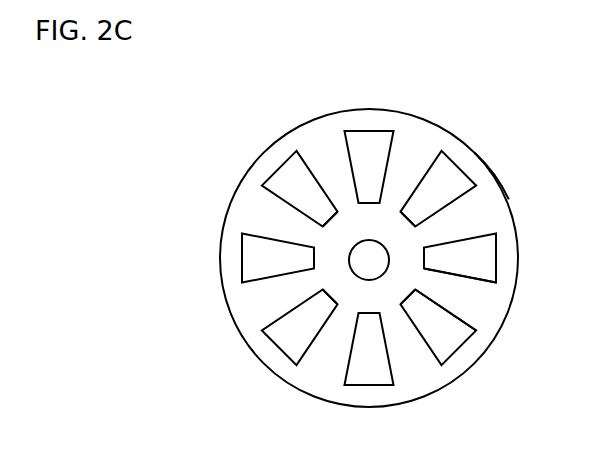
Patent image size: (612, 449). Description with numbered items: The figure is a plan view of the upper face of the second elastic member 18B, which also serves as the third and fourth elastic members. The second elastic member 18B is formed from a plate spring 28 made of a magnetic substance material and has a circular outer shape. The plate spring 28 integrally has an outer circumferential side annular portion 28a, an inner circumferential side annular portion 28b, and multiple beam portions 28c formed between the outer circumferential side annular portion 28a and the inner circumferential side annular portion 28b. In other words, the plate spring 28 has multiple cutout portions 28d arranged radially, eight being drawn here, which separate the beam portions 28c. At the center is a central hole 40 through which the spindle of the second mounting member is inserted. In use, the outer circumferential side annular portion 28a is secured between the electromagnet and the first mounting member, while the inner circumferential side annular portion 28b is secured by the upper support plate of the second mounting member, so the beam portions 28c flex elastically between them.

The second elastic member 18B is at (206, 107).
The plate spring 28 is at (433, 120).
The outer circumferential side annular portion 28a is at (472, 167).
The inner circumferential side annular portion 28b is at (403, 243).
The beam portions 28c is at (463, 298).
The cutout portions 28d is at (437, 330).
The central hole 40 is at (357, 248).